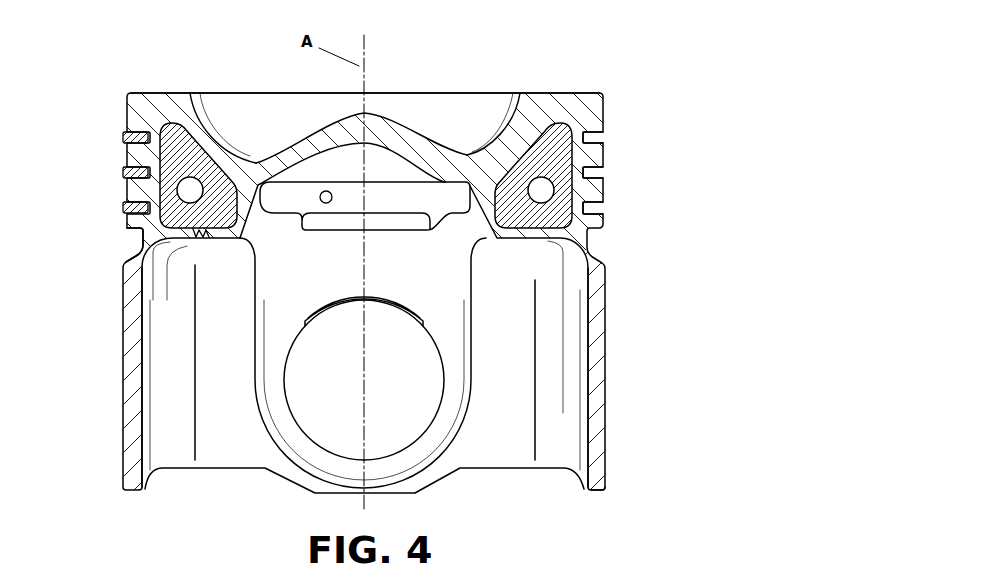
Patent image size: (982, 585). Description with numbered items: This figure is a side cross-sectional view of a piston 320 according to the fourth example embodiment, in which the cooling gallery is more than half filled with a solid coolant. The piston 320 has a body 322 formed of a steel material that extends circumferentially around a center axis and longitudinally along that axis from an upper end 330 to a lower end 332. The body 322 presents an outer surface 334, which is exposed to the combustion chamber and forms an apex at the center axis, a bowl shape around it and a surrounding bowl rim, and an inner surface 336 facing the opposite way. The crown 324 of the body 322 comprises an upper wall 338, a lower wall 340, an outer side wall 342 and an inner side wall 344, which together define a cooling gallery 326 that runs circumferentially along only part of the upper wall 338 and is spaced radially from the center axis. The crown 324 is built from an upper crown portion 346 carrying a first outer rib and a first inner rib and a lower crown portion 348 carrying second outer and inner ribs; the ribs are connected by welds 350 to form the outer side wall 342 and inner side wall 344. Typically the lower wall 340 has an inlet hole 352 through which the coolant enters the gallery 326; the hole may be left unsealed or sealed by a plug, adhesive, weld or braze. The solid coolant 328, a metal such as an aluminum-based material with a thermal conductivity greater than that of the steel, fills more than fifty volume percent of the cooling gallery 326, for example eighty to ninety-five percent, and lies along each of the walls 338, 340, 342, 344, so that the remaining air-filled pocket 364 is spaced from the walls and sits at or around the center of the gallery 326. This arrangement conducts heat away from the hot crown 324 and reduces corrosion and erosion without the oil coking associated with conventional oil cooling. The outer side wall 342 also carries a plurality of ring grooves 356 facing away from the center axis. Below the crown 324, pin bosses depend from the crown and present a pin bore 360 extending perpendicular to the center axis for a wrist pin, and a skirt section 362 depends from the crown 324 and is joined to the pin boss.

The piston 320 is at (534, 72).
The body 322 is at (125, 388).
The crown 324 is at (602, 96).
The cooling gallery 326 is at (171, 122).
The solid coolant 328 is at (168, 168).
The upper end 330 is at (567, 95).
The lower end 332 is at (600, 490).
The outer surface 334 is at (312, 128).
The inner surface 336 is at (412, 167).
The upper wall 338 is at (192, 142).
The lower wall 340 is at (142, 250).
The outer side wall 342 is at (163, 191).
The inner side wall 344 is at (247, 193).
The upper crown portion 346 is at (277, 185).
The lower crown portion 348 is at (255, 237).
The welds 350 is at (262, 203).
The inlet hole 352 is at (203, 238).
The ring grooves 356 is at (590, 207).
The pin bore 360 is at (412, 441).
The skirt section 362 is at (597, 412).
The pocket 364 is at (541, 188).